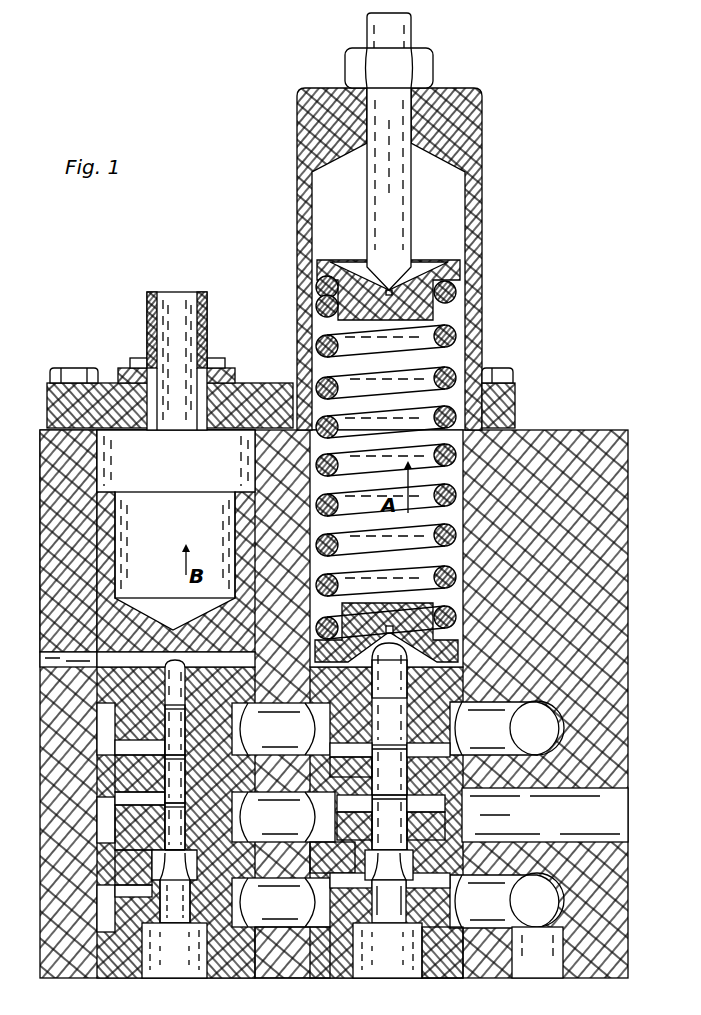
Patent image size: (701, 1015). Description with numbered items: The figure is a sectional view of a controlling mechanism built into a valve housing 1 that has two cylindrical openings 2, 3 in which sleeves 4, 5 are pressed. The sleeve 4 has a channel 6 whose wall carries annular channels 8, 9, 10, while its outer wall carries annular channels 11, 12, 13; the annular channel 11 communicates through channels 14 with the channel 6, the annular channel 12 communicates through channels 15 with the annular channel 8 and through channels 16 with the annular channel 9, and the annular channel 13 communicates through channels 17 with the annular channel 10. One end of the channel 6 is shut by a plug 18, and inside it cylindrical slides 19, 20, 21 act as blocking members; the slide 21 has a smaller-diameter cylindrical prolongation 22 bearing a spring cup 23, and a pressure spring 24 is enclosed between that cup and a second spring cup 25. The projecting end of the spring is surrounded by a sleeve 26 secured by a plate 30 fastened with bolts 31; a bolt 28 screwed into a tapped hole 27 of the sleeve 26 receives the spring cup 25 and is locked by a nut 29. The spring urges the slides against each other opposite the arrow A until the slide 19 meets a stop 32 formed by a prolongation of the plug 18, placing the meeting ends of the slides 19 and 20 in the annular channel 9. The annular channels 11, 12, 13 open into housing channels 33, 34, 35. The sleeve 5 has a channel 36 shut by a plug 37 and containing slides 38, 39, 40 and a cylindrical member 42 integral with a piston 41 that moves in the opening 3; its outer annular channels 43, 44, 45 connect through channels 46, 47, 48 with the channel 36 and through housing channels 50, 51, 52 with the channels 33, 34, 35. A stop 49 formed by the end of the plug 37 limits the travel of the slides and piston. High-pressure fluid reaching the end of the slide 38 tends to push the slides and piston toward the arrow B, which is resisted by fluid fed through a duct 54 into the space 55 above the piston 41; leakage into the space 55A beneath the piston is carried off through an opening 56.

The valve housing 1 is at (628, 500).
The cylindrical opening 2 is at (463, 482).
The cylindrical opening 3 is at (97, 465).
The sleeve 4 is at (445, 978).
The sleeve 5 is at (238, 978).
The channel 6 is at (413, 892).
The annular channel 8 is at (408, 828).
The annular channel 9 is at (414, 779).
The annular channel 10 is at (430, 758).
The annular channel 11 is at (322, 927).
The annular channel 12 is at (318, 848).
The annular channel 13 is at (328, 757).
The channels 14 is at (352, 889).
The channels 15 is at (352, 825).
The channels 16 is at (350, 805).
The channels 17 is at (358, 748).
The plug 18 is at (393, 978).
The cylindrical slide 19 is at (412, 840).
The cylindrical slide 20 is at (372, 778).
The cylindrical slide 21 is at (372, 694).
The cylindrical prolongation 22 is at (407, 690).
The spring cup 23 is at (458, 652).
The pressure spring 24 is at (450, 550).
The second spring cup 25 is at (317, 272).
The sleeve 26 is at (472, 222).
The tapped hole 27 is at (362, 106).
The bolt 28 is at (376, 30).
The nut 29 is at (426, 68).
The plate 30 is at (515, 392).
The bolts 31 is at (76, 368).
The stop 32 is at (389, 886).
The channel 33 is at (540, 978).
The channel 34 is at (620, 818).
The channel 35 is at (552, 742).
The channel 36 is at (195, 866).
The plug 37 is at (172, 978).
The cylindrical slide 38 is at (185, 830).
The cylindrical slide 39 is at (185, 772).
The cylindrical slide 40 is at (185, 716).
The piston 41 is at (95, 548).
The cylindrical member 42 is at (185, 688).
The annular channel 43 is at (97, 913).
The annular channel 44 is at (97, 840).
The annular channel 45 is at (97, 728).
The channels 46 is at (141, 868).
The channels 47 is at (153, 808).
The channels 48 is at (150, 760).
The stop 49 is at (193, 896).
The channel 50 is at (292, 882).
The channel 51 is at (278, 800).
The channel 52 is at (286, 710).
The duct 54 is at (182, 303).
The space 55 is at (225, 460).
The space 55A is at (150, 667).
The opening 56 is at (45, 660).